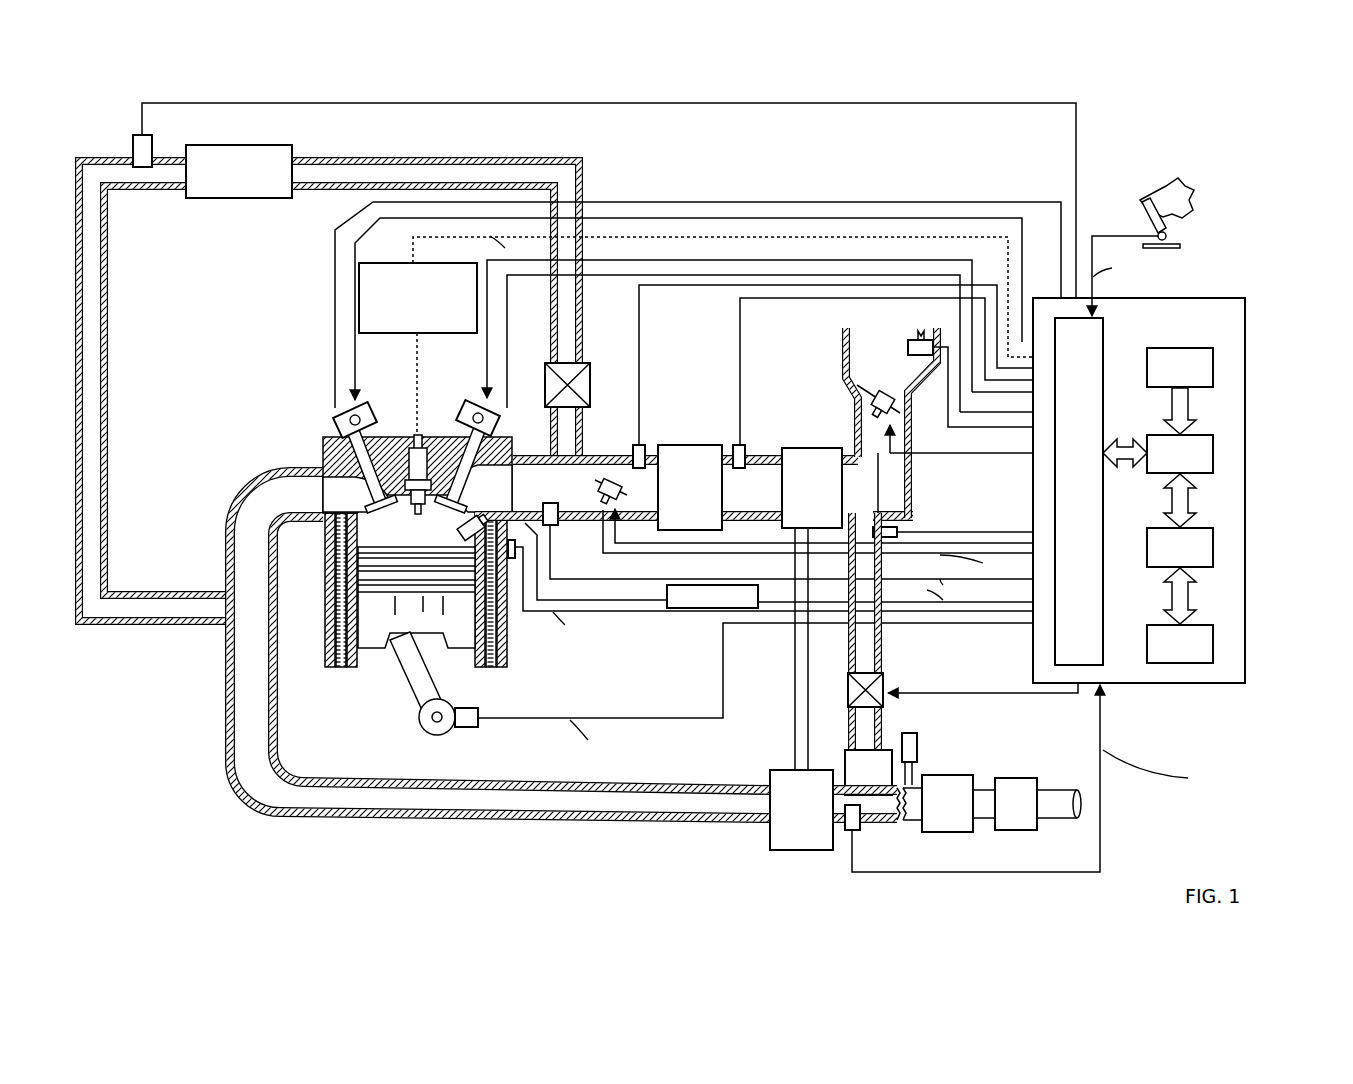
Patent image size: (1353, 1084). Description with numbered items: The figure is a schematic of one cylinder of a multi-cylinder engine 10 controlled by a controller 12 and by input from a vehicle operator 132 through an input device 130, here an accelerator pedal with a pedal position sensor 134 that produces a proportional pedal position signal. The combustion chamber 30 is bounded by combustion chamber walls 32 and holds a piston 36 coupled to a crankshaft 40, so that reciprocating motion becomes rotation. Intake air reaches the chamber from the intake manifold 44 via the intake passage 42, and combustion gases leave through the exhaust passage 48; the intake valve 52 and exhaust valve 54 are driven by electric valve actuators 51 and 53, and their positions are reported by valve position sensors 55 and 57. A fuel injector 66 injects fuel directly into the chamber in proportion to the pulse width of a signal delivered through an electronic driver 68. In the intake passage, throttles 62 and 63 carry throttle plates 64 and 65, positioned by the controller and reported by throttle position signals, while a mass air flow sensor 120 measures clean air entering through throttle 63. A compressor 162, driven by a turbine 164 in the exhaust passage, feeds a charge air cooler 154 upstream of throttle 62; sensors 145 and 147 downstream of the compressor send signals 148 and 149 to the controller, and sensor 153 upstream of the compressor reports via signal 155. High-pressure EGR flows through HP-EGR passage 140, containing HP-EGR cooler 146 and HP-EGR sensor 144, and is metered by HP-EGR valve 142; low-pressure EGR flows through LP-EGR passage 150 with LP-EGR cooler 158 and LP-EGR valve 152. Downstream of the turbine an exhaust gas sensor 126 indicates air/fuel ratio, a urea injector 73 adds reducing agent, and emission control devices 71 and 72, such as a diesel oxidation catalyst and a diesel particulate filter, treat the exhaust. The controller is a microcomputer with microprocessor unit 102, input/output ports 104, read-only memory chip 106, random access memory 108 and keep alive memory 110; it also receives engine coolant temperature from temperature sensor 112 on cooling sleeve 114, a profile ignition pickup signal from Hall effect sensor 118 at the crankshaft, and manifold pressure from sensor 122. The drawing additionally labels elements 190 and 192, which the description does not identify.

The engine 10 is at (262, 392).
The controller 12 is at (1235, 298).
The combustion chamber 30 is at (392, 532).
The combustion chamber walls 32 is at (363, 657).
The piston 36 is at (400, 623).
The crankshaft 40 is at (438, 736).
The intake passage 42 is at (891, 423).
The intake manifold 44 is at (694, 488).
The exhaust passage 48 is at (500, 645).
The electric valve actuator 51 is at (470, 405).
The intake valve 52 is at (455, 512).
The electric valve actuator 53 is at (368, 405).
The exhaust valve 54 is at (357, 505).
The valve position sensor 55 is at (495, 420).
The valve position sensor 57 is at (345, 422).
The throttle 62 is at (598, 478).
The throttle 63 is at (852, 385).
The throttle plate 64 is at (600, 490).
The throttle plate 65 is at (865, 400).
The fuel injector 66 is at (462, 530).
The electronic driver 68 is at (758, 603).
The emission control device 71 is at (935, 803).
The emission control device 72 is at (1027, 804).
The urea injector 73 is at (918, 745).
The microprocessor unit 102 is at (1213, 447).
The input/output ports 104 is at (1103, 327).
The read-only memory chip 106 is at (1213, 365).
The random access memory 108 is at (1213, 543).
The keep alive memory 110 is at (1213, 642).
The temperature sensor 112 is at (512, 560).
The cooling sleeve 114 is at (495, 640).
The Hall effect sensor 118 is at (468, 730).
The mass air flow sensor 120 is at (918, 338).
The manifold pressure sensor 122 is at (548, 503).
The exhaust gas sensor 126 is at (857, 832).
The input device 130 is at (1140, 210).
The vehicle operator 132 is at (1190, 193).
The pedal position sensor 134 is at (1173, 233).
The HP-EGR passage 140 is at (490, 157).
The HP-EGR valve 142 is at (590, 387).
The HP-EGR sensor 144 is at (135, 137).
The sensor 145 is at (745, 445).
The HP-EGR cooler 146 is at (239, 171).
The sensor 147 is at (645, 445).
The signal 148 is at (740, 365).
The signal 149 is at (639, 365).
The LP-EGR passage 150 is at (885, 640).
The LP-EGR valve 152 is at (847, 693).
The sensor 153 is at (875, 525).
The charge air cooler 154 is at (690, 487).
The signal 155 is at (935, 530).
The LP-EGR cooler 158 is at (868, 772).
The compressor 162 is at (812, 609).
The turbine 164 is at (833, 810).
The ignition system 190 is at (370, 262).
The spark plug 192 is at (405, 447).